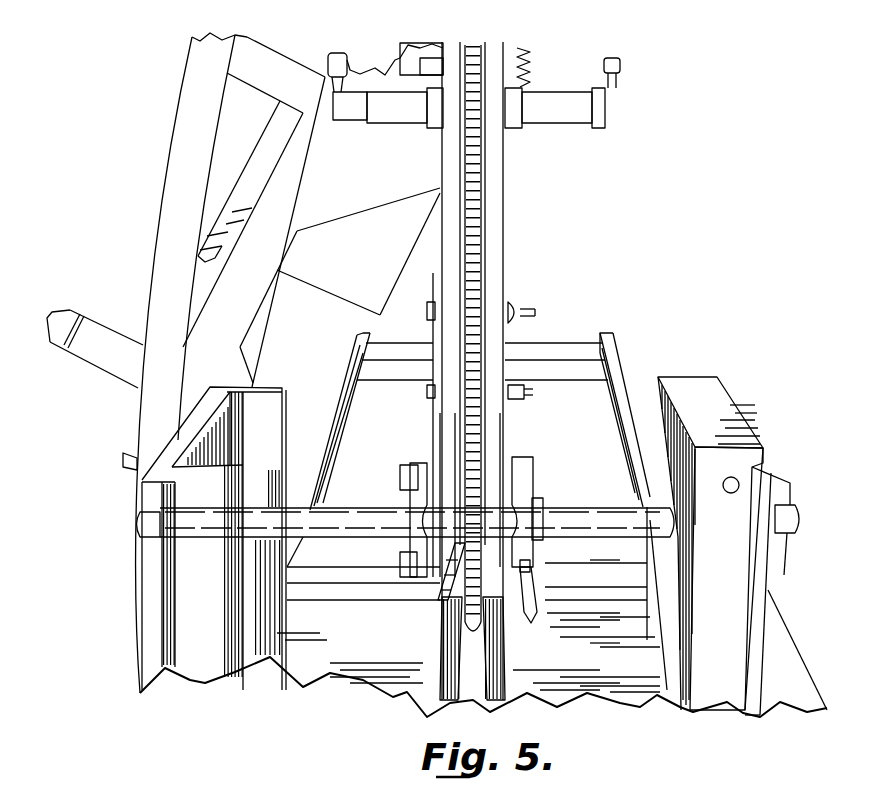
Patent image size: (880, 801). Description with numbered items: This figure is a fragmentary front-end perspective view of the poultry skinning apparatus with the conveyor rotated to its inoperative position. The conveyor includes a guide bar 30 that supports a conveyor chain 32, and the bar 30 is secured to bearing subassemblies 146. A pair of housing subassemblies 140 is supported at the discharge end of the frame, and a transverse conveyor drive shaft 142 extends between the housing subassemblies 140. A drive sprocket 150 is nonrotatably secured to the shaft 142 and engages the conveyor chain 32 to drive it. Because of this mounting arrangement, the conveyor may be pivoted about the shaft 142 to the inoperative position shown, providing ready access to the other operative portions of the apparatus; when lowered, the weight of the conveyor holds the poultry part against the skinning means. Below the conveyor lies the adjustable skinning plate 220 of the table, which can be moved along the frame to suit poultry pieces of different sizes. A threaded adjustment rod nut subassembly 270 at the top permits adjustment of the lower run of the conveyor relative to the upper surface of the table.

The guide bar 30 is at (498, 195).
The conveyor chain 32 is at (497, 42).
The housing subassemblies 140 is at (742, 501).
The transverse conveyor drive shaft 142 is at (625, 515).
The bearing subassemblies 146 is at (423, 463).
The drive sprocket 150 is at (440, 590).
The adjustable skinning portion or plate 220 is at (575, 661).
The threaded adjustment rod nut subassembly 270 is at (632, 92).